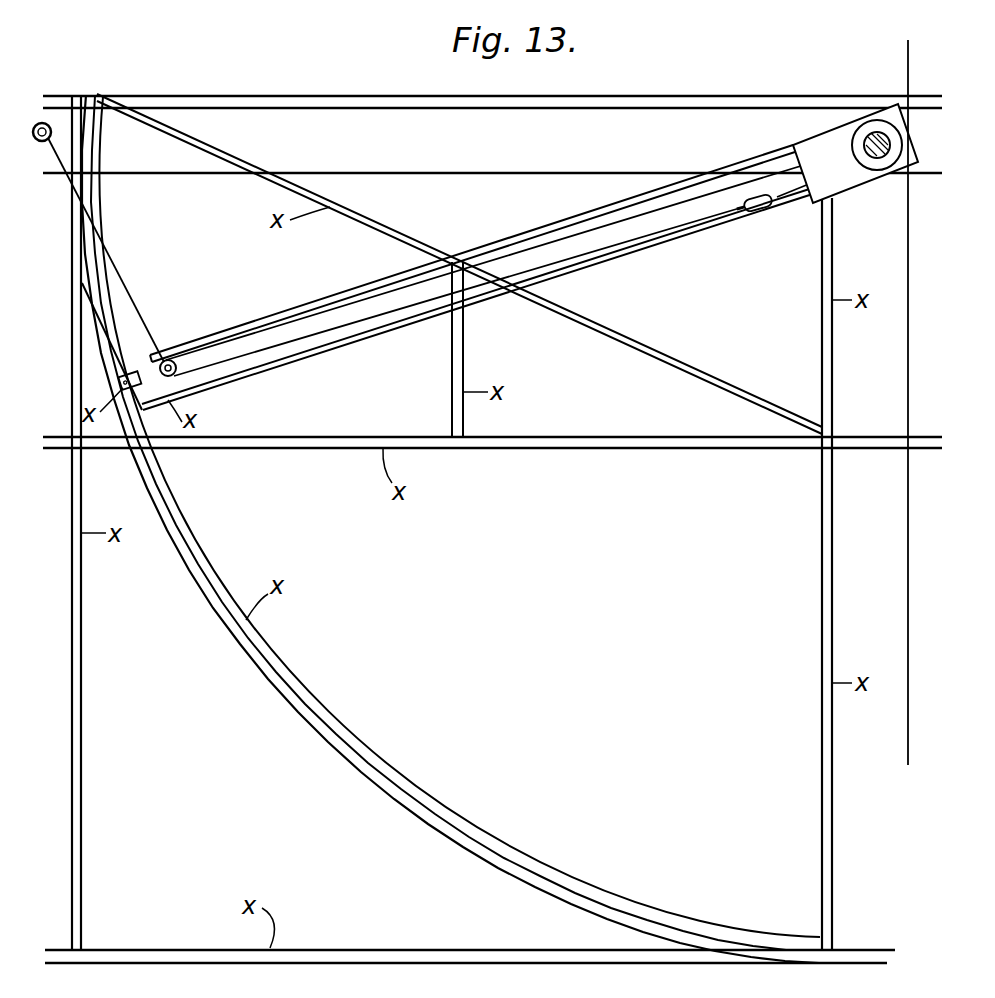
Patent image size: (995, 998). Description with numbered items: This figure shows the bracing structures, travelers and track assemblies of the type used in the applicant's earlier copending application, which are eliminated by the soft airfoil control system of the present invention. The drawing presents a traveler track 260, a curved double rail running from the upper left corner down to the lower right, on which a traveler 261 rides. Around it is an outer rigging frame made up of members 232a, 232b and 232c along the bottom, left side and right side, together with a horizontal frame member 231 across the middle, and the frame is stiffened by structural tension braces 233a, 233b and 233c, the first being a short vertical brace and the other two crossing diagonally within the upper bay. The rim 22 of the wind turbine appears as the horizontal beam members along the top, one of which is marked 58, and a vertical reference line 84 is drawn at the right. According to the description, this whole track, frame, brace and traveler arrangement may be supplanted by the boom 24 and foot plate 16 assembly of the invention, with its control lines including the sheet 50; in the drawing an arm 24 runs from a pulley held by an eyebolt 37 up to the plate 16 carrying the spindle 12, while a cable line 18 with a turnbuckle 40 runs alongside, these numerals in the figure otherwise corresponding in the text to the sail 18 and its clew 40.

The spindle 12 is at (890, 152).
The foot plate 16 is at (853, 188).
The sail 18 is at (796, 192).
The rim 22 is at (535, 110).
The boom 24 is at (265, 314).
The eyebolt 37 is at (180, 360).
The clew 40 is at (760, 213).
The sheet 50 is at (104, 244).
The rail 58 is at (606, 110).
The reference line 84 is at (910, 650).
The outer rigging frame 231 is at (603, 449).
The outer rigging frame 232a is at (347, 949).
The outer rigging frame 232b is at (82, 627).
The outer rigging frame 232c is at (833, 387).
The structural tension brace 233a is at (464, 350).
The structural tension brace 233b is at (394, 226).
The structural tension brace 233c is at (208, 400).
The traveler track 260 is at (282, 667).
The traveler 261 is at (131, 374).